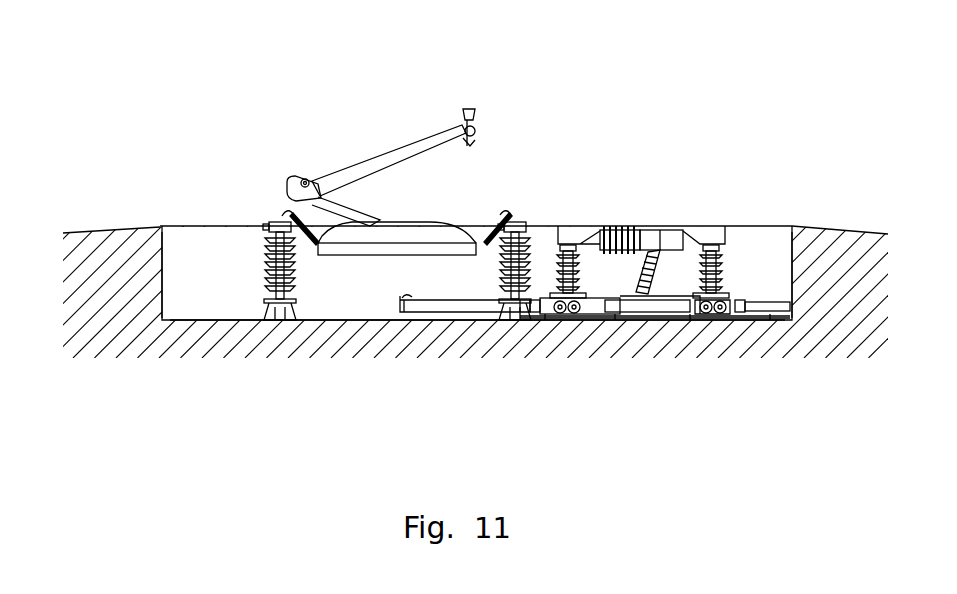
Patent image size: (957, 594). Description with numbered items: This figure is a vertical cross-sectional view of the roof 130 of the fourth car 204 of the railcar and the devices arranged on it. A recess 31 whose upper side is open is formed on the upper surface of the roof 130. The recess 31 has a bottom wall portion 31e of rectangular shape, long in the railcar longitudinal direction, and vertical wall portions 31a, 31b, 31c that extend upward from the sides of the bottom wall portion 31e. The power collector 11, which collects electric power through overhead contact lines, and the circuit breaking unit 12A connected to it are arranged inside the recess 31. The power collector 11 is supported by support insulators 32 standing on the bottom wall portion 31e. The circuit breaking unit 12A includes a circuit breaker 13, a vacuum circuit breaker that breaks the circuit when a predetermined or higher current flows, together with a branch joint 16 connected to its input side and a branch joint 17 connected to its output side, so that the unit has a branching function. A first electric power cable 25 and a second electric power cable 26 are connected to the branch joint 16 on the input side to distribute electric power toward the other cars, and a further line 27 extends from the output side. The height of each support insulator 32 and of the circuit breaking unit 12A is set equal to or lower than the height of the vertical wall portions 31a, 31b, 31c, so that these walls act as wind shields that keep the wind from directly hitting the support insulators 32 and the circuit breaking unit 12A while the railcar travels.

The fourth car 204 is at (78, 231).
The roof 130 is at (130, 226).
The recess 31 is at (232, 255).
The vertical wall portion 31a is at (164, 282).
The vertical wall portion 31b is at (791, 270).
The vertical wall portion 31c is at (758, 242).
The bottom wall portion 31e is at (325, 320).
The power collector 11 is at (411, 145).
The support insulator 32 is at (270, 285).
The first electric power cable 25 is at (428, 305).
The branch joint 16 is at (565, 312).
The second electric power cable 26 is at (625, 306).
The branch joint 17 is at (710, 310).
The right tube 27 is at (765, 306).
The circuit breaker 13 is at (664, 240).
The circuit breaking unit 12A is at (640, 227).